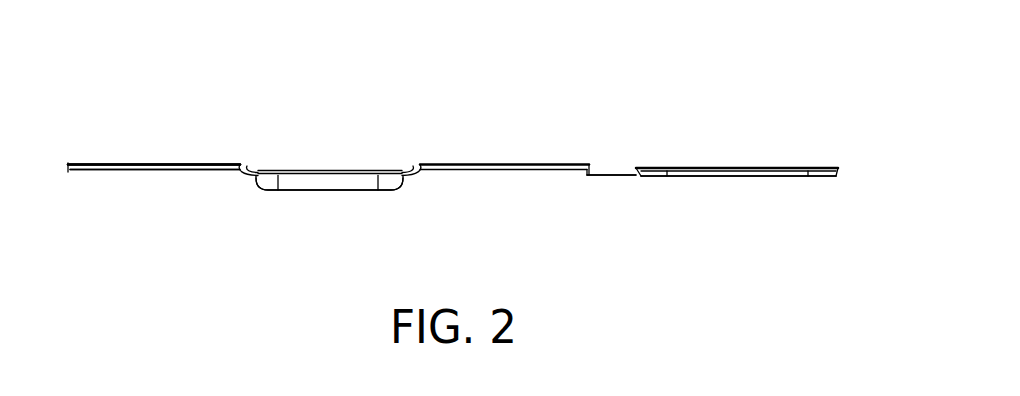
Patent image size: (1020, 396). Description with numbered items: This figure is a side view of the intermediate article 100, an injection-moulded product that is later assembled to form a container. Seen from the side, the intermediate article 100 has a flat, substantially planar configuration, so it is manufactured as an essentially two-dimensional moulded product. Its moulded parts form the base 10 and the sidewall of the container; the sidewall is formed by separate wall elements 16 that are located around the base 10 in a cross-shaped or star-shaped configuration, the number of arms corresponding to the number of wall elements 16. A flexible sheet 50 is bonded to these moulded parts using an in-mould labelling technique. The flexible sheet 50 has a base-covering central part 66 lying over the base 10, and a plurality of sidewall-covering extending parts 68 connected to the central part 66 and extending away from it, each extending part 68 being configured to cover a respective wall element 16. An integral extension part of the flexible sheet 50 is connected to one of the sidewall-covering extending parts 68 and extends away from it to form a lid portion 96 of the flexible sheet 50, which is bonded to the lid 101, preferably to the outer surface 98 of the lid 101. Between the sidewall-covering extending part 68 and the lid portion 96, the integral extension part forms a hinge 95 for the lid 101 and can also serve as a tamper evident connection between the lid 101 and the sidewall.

The base 10 is at (318, 192).
The wall element 16 is at (213, 163).
The flexible sheet 50 is at (613, 174).
The base-covering central part 66 is at (349, 192).
The sidewall-covering extending part 68 is at (115, 172).
The hinge 95 is at (620, 176).
The lid portion 96 is at (777, 177).
The outer surface 98 is at (695, 177).
The intermediate article 100 is at (165, 165).
The lid 101 is at (738, 167).